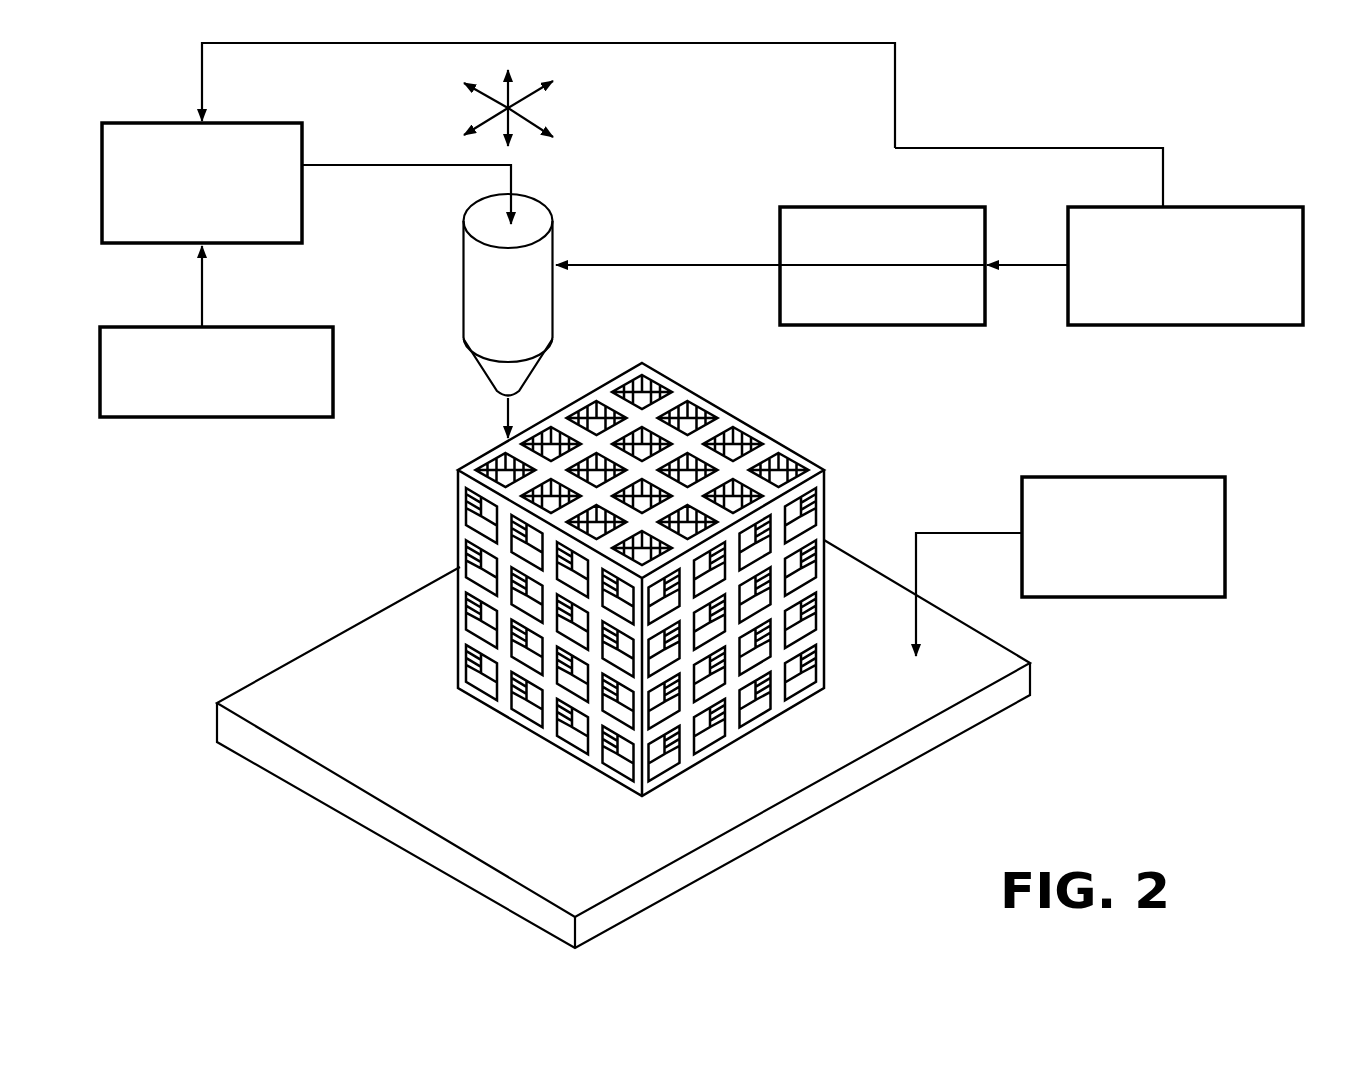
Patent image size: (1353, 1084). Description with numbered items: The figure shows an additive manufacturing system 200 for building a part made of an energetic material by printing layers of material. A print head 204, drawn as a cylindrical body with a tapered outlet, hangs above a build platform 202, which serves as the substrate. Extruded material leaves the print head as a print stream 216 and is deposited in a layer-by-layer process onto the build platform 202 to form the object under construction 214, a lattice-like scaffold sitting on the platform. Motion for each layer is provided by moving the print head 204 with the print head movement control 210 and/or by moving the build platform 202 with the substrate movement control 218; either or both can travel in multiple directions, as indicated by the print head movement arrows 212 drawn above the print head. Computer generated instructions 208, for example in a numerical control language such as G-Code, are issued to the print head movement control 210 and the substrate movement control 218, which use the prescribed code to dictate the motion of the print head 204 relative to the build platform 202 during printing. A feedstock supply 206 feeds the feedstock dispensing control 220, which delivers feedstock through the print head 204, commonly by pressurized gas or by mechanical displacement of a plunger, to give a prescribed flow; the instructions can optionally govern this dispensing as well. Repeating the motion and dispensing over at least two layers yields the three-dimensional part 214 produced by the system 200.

The additive manufacturing system 200 is at (1022, 96).
The build platform 202 is at (360, 727).
The print head 204 is at (527, 326).
The feedstock supply 206 is at (235, 418).
The computer generated instructions 208 is at (1186, 327).
The print head movement control 210 is at (906, 326).
The print head movement arrows 212 is at (522, 112).
The object under construction 214 is at (580, 720).
The print stream 216 is at (500, 406).
The substrate movement control 218 is at (1149, 598).
The feedstock dispensing control 220 is at (303, 218).